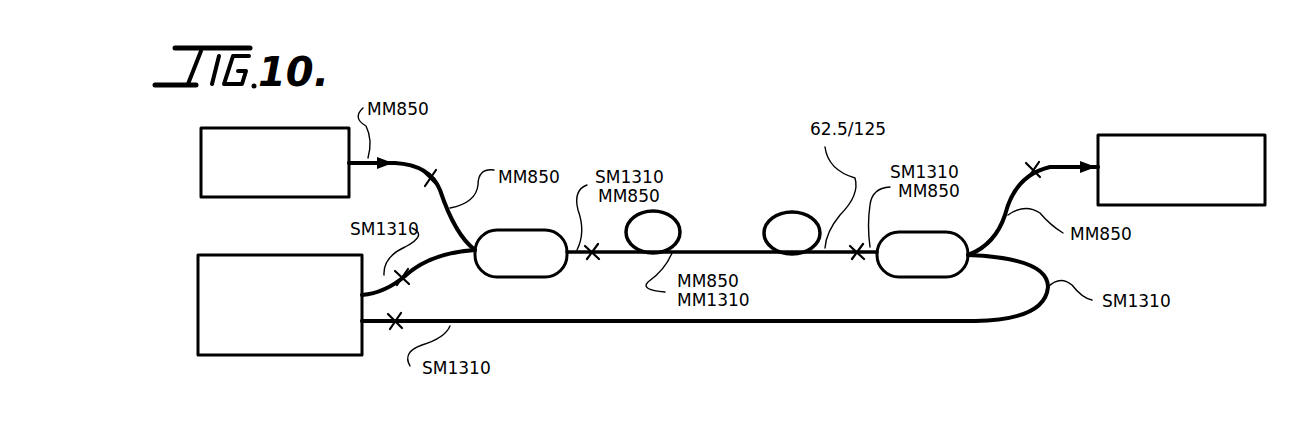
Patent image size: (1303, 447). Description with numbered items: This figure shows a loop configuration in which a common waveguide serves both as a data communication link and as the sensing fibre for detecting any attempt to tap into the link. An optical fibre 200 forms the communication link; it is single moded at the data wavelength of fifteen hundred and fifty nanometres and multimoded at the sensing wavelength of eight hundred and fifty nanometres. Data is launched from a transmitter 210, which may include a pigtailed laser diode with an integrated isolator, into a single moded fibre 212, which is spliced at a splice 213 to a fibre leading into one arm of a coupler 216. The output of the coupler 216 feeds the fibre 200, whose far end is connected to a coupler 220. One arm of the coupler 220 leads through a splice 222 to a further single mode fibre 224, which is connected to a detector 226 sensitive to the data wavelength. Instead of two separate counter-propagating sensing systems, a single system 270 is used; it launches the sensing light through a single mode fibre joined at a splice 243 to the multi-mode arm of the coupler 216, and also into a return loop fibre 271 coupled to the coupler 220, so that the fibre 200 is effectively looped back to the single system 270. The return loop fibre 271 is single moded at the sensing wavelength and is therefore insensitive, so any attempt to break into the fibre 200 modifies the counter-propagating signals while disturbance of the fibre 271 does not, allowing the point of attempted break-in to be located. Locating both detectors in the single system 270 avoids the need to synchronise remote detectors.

The optical fibre 200 is at (715, 251).
The transmitter 210 is at (295, 177).
The single moded fibre 212 is at (417, 162).
The splice 213 is at (443, 206).
The coupler 216 is at (542, 269).
The coupler 220 is at (942, 270).
The splice 222 is at (1008, 190).
The single mode fibre 224 is at (1060, 164).
The detector 226 is at (1188, 184).
The splice 243 is at (433, 262).
The single system 270 is at (296, 322).
The return loop fibre 271 is at (530, 321).